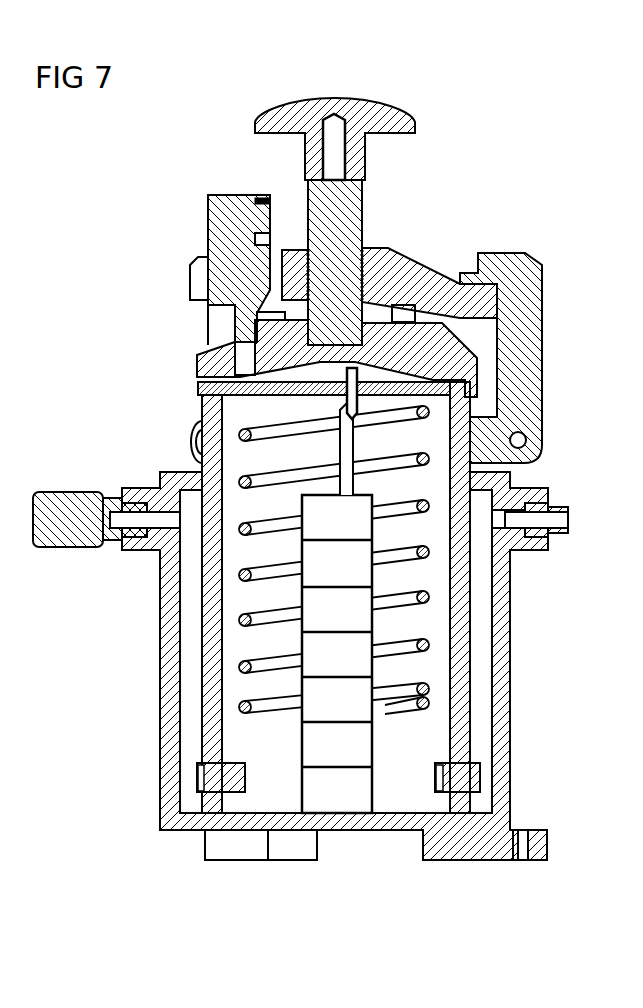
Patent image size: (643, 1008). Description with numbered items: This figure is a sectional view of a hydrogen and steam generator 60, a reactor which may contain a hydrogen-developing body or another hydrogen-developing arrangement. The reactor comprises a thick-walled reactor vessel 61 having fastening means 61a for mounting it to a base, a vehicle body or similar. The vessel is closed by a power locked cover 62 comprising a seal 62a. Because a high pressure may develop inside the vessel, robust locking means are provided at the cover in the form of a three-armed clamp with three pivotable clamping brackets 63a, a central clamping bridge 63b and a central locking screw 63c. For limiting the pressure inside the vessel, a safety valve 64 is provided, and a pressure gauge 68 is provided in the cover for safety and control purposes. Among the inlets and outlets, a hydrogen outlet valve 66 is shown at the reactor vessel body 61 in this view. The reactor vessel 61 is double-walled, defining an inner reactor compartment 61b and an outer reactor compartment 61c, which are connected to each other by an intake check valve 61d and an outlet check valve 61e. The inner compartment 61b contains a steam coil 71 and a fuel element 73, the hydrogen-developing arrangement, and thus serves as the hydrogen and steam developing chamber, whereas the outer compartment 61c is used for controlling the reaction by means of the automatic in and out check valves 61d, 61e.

The hydrogen and steam generator 60 is at (514, 133).
The reactor vessel 61 is at (502, 713).
The fastening means 61a is at (538, 843).
The inner reactor compartment 61b is at (440, 660).
The outer reactor compartment 61c is at (192, 655).
The intake check valve 61d is at (215, 780).
The outlet check valve 61e is at (468, 777).
The cover 62 is at (460, 350).
The seal 62a is at (470, 387).
The pivotable clamping bracket 63a is at (523, 263).
The central clamping bridge 63b is at (408, 272).
The central locking screw 63c is at (317, 205).
The safety valve 64 is at (78, 498).
The hydrogen outlet valve 66 is at (560, 503).
The pressure gauge 68 is at (212, 235).
The steam coil 71 is at (418, 703).
The fuel element 73 is at (360, 787).